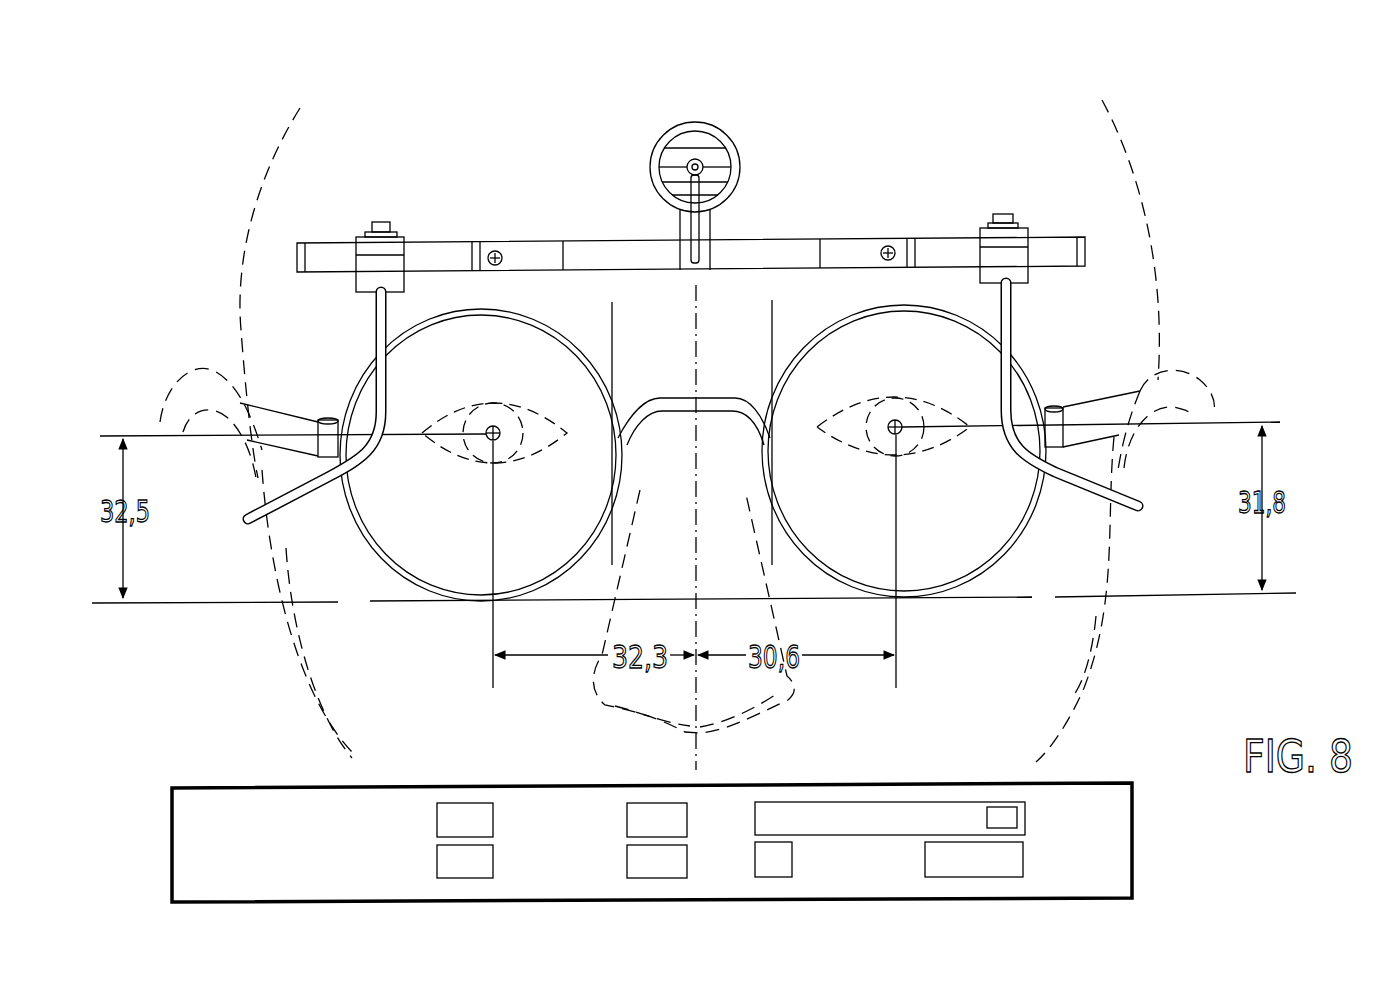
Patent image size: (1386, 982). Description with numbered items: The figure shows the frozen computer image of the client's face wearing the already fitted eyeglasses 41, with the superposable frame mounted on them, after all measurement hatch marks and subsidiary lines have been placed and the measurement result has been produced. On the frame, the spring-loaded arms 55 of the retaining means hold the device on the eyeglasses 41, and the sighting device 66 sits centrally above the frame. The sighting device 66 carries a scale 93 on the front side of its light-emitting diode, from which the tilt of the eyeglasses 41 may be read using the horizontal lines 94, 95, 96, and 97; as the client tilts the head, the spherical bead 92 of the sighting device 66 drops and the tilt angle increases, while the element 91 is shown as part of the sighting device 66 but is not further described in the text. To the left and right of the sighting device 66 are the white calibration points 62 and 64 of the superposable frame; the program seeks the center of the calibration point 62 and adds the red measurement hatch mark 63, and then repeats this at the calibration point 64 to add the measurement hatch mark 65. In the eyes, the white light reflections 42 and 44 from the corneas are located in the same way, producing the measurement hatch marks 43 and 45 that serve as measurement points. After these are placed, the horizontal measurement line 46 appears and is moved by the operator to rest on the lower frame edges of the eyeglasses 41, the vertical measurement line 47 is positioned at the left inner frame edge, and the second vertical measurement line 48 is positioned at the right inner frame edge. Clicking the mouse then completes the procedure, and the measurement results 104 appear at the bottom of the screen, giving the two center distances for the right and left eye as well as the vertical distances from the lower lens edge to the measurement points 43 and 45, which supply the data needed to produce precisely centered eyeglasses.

The eyeglasses 41 is at (375, 568).
The light reflection 42 is at (903, 438).
The measurement hatch mark 43 is at (900, 421).
The light reflection 44 is at (485, 443).
The measurement hatch mark 45 is at (489, 427).
The horizontal measurement line 46 is at (975, 600).
The vertical measurement line 47 is at (771, 346).
The second vertical measurement line 48 is at (613, 346).
The spring-loaded arm 55 is at (292, 496).
The calibration point 62 is at (896, 245).
The measurement hatch mark 63 is at (886, 245).
The calibration point 64 is at (498, 250).
The measurement hatch mark 65 is at (489, 250).
The sighting device 66 is at (652, 150).
The dial ring 91 is at (690, 140).
The spherical bead 92 is at (700, 158).
The scale 93 is at (668, 175).
The horizontal line 94 is at (726, 148).
The horizontal line 95 is at (730, 167).
The horizontal line 96 is at (736, 186).
The horizontal line 97 is at (742, 205).
The measurement results 104 is at (256, 782).